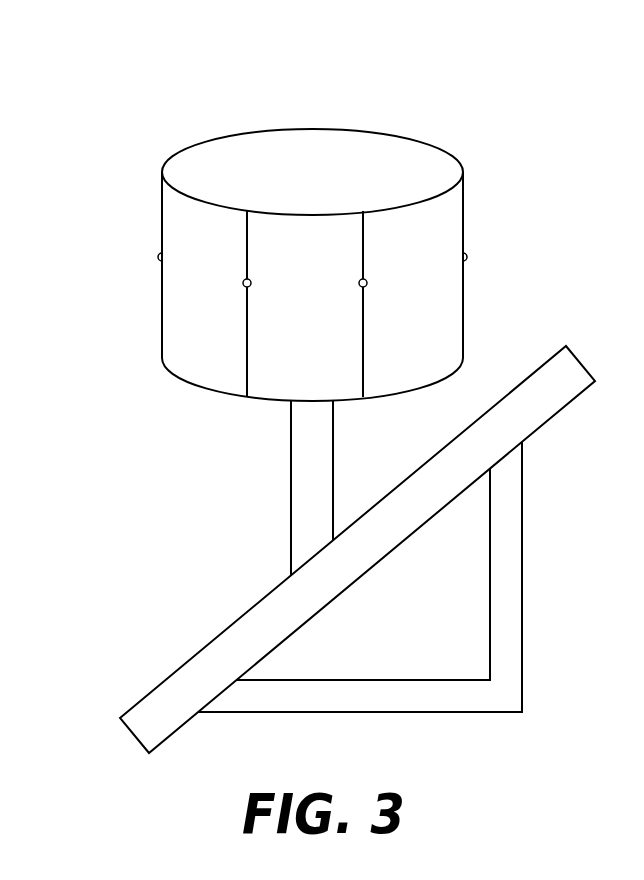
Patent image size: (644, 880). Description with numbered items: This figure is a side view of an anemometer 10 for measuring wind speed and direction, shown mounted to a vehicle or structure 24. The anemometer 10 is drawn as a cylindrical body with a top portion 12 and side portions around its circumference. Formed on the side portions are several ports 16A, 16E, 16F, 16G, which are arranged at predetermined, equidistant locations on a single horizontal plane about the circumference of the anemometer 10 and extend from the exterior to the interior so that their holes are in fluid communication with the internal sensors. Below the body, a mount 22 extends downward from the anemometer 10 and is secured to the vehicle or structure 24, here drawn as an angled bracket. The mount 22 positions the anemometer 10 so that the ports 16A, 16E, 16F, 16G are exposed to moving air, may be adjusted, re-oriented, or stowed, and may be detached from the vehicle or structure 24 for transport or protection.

The anemometer system 10 is at (468, 110).
The top portion 12 is at (220, 167).
The port 16A is at (467, 257).
The port 16E is at (158, 257).
The port 16F is at (243, 284).
The port 16G is at (367, 284).
The mount 22 is at (291, 477).
The vehicle or structure 24 is at (177, 670).